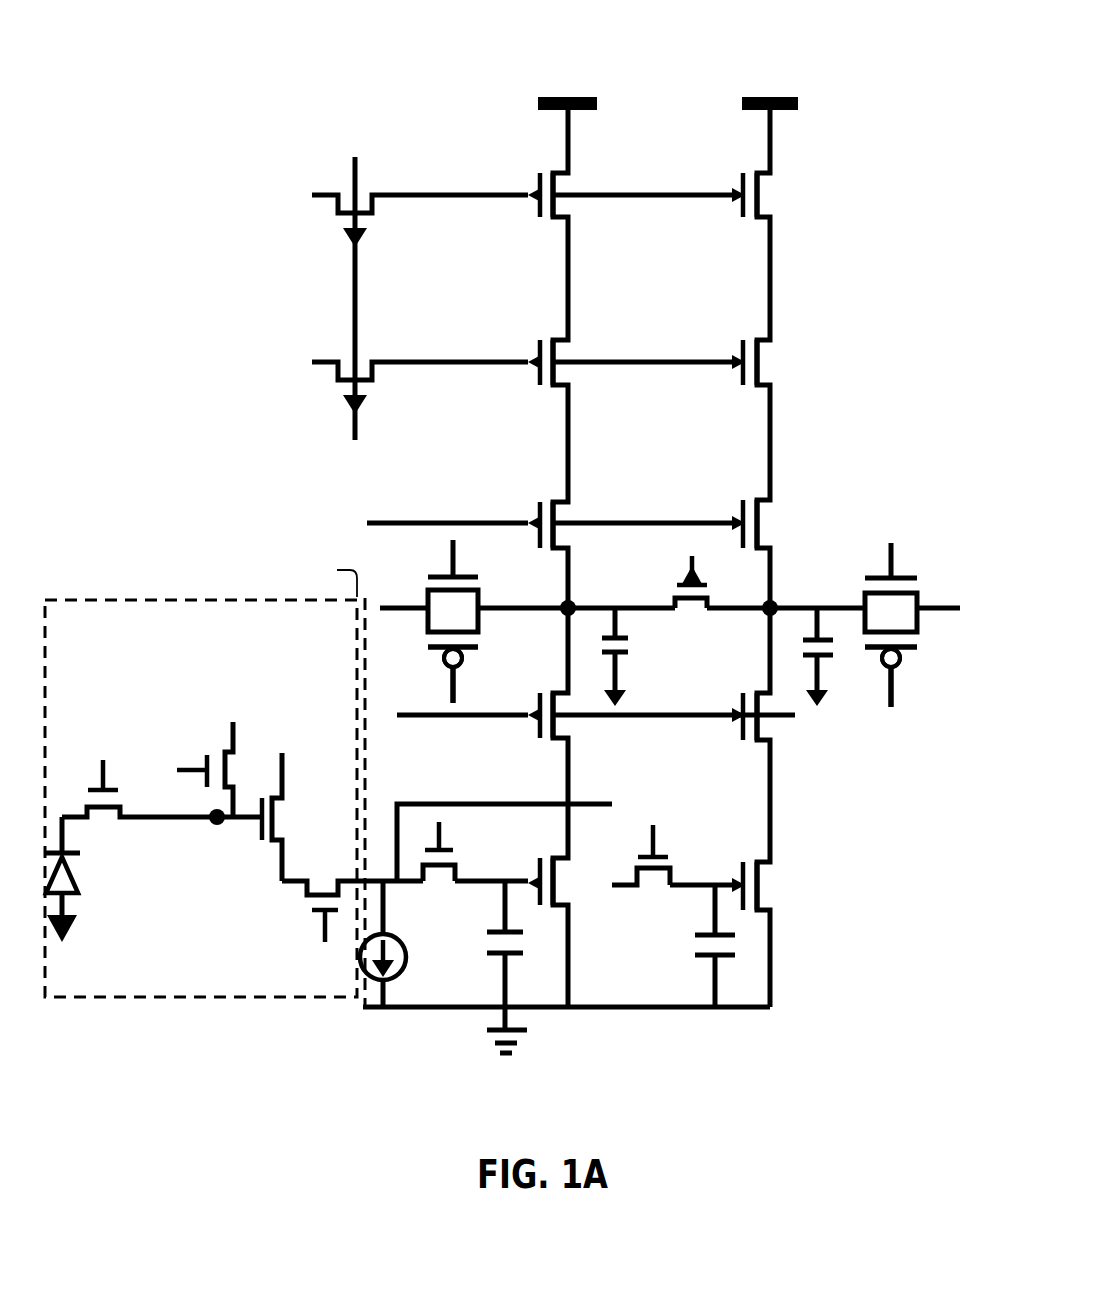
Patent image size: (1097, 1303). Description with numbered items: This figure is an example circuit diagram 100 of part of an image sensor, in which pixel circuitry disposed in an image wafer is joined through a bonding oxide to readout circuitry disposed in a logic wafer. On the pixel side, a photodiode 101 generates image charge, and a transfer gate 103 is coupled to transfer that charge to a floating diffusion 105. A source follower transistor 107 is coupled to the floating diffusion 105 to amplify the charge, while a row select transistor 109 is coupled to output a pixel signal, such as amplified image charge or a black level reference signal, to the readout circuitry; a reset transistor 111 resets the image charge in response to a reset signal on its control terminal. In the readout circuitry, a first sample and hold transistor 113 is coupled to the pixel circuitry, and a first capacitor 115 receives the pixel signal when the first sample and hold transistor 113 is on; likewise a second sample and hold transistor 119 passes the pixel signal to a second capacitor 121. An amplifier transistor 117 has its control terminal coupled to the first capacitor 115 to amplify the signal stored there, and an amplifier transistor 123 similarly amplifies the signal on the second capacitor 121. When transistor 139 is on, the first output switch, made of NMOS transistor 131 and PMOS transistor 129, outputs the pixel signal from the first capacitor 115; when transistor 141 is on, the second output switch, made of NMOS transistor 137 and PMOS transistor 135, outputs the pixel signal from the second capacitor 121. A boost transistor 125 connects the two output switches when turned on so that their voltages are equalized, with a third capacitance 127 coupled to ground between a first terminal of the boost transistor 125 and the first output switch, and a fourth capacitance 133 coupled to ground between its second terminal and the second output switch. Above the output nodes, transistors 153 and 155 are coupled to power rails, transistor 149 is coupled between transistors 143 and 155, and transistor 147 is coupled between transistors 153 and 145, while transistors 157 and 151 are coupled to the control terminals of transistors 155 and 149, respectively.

The circuit diagram 100 is at (572, 38).
The photodiode 101 is at (75, 882).
The transfer gate 103 is at (102, 820).
The floating diffusion 105 is at (197, 822).
The source follower transistor 107 is at (280, 813).
The row select transistor 109 is at (306, 910).
The reset transistor 111 is at (240, 772).
The first sample and hold transistor 113 is at (450, 920).
The first capacitor 115 is at (493, 963).
The amplifier transistor 117 is at (566, 890).
The second sample and hold transistor 119 is at (652, 932).
The second capacitor 121 is at (707, 965).
The amplifier transistor 123 is at (770, 885).
The boost transistor 125 is at (688, 612).
The third capacitance 127 is at (625, 645).
The PMOS transistor 129 is at (485, 640).
The NMOS transistor 131 is at (420, 585).
The fourth capacitance 133 is at (830, 672).
The PMOS transistor 135 is at (913, 660).
The NMOS transistor 137 is at (912, 572).
The transistor 139 is at (572, 725).
The transistor 141 is at (747, 742).
The transistor 143 is at (545, 496).
The transistor 145 is at (750, 496).
The transistor 147 is at (747, 335).
The transistor 149 is at (548, 335).
The transistor 151 is at (343, 350).
The transistor 153 is at (747, 168).
The transistor 155 is at (540, 165).
The transistor 157 is at (337, 184).